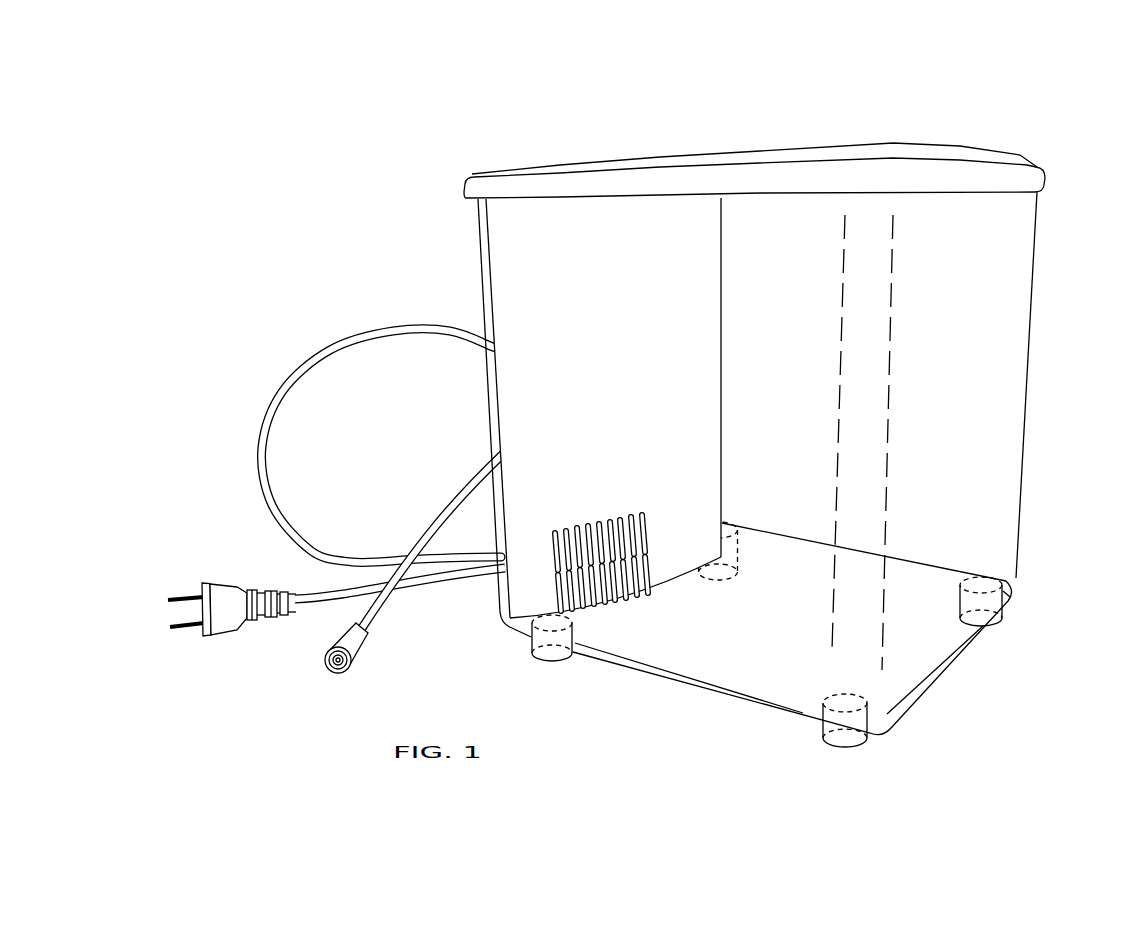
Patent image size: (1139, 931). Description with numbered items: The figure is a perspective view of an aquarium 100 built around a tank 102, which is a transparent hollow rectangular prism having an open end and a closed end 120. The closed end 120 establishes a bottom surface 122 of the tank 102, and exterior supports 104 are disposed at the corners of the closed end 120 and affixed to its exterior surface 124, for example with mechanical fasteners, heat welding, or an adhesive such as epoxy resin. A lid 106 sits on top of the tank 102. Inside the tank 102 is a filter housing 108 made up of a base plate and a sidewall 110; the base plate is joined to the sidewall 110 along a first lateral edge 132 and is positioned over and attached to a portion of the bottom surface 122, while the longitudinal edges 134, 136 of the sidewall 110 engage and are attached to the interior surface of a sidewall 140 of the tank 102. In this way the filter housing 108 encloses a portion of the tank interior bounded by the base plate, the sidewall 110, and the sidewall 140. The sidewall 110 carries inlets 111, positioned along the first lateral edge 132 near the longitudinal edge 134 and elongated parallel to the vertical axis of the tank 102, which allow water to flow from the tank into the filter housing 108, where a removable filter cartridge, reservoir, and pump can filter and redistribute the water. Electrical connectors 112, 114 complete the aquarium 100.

The aquarium 100 is at (999, 72).
The tank 102 is at (1033, 271).
The exterior supports 104 is at (859, 743).
The lid 106 is at (1018, 165).
The filter housing 108 is at (512, 272).
The sidewall 110 is at (683, 380).
The inlets 111 is at (597, 510).
The electrical connector 112 is at (313, 592).
The electrical connector 114 is at (377, 612).
The closed end 120 is at (849, 781).
The bottom surface 122 is at (757, 608).
The exterior surface 124 is at (696, 708).
The first lateral edge 132 is at (680, 580).
The longitudinal edge 134 is at (493, 343).
The longitudinal edge 136 is at (722, 323).
The sidewall 140 is at (462, 219).